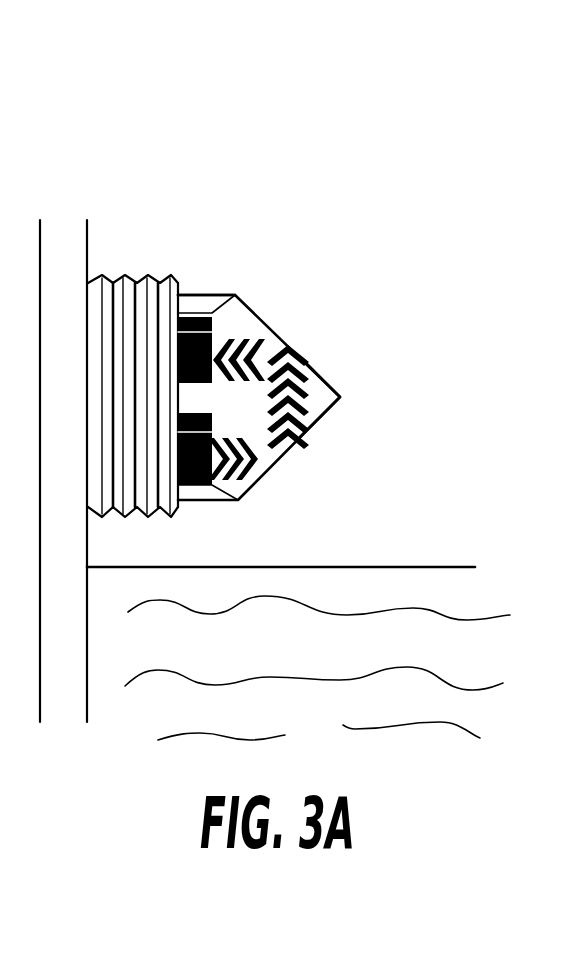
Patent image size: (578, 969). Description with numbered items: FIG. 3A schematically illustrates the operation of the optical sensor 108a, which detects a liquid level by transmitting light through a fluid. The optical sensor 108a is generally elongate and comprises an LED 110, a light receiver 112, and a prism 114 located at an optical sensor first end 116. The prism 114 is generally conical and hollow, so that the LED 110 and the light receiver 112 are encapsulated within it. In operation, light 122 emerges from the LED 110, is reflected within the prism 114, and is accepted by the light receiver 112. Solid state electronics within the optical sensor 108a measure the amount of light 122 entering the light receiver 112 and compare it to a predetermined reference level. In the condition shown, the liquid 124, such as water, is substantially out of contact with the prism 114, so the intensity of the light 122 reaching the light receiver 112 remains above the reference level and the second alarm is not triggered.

The optical sensor 108a is at (352, 200).
The LED 110 is at (215, 492).
The light receiver 112 is at (233, 293).
The prism 114 is at (305, 435).
The optical sensor first end 116 is at (411, 400).
The light 122 is at (272, 347).
The liquid 124 is at (297, 654).